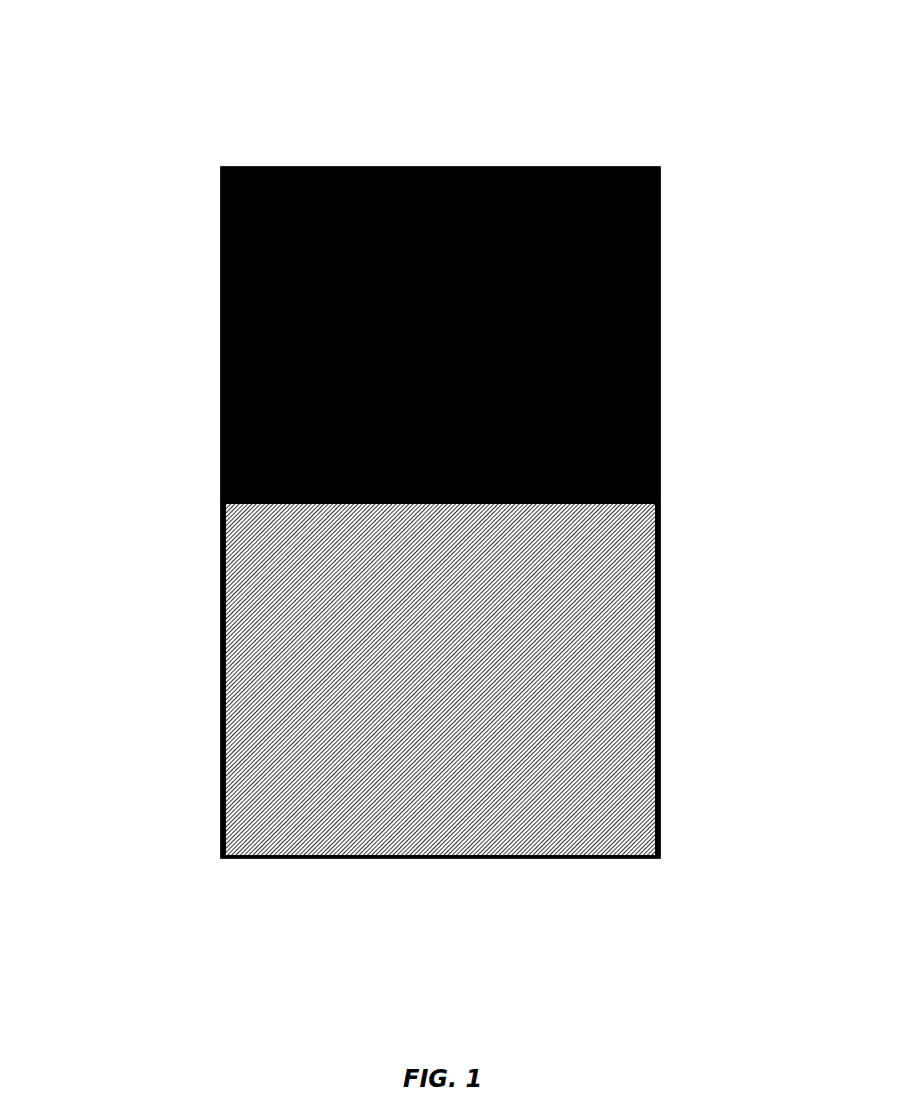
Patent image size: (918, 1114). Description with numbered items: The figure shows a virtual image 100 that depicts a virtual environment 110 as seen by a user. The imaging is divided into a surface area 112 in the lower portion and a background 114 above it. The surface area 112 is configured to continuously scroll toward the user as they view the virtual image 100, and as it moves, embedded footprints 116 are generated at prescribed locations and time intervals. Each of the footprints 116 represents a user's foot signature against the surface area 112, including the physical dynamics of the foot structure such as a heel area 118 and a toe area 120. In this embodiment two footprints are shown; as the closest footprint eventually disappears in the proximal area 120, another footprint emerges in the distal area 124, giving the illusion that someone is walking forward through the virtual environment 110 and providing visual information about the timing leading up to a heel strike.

The virtual image 100 is at (448, 138).
The virtual environment 110 is at (438, 9).
The surface area 112 is at (248, 609).
The background 114 is at (660, 341).
The footprints 116 is at (360, 660).
The heel area 118 is at (362, 668).
The toe area 120 is at (573, 780).
The distal area 124 is at (587, 641).